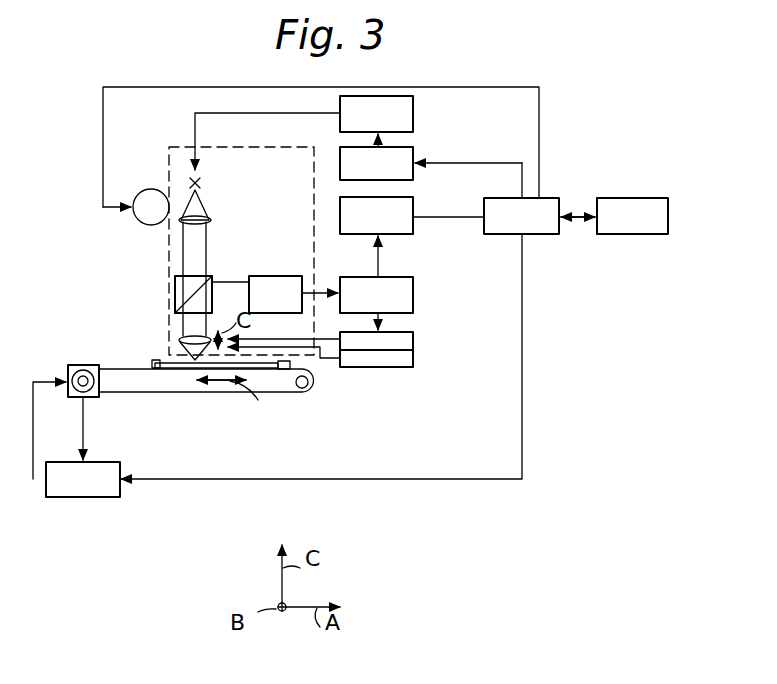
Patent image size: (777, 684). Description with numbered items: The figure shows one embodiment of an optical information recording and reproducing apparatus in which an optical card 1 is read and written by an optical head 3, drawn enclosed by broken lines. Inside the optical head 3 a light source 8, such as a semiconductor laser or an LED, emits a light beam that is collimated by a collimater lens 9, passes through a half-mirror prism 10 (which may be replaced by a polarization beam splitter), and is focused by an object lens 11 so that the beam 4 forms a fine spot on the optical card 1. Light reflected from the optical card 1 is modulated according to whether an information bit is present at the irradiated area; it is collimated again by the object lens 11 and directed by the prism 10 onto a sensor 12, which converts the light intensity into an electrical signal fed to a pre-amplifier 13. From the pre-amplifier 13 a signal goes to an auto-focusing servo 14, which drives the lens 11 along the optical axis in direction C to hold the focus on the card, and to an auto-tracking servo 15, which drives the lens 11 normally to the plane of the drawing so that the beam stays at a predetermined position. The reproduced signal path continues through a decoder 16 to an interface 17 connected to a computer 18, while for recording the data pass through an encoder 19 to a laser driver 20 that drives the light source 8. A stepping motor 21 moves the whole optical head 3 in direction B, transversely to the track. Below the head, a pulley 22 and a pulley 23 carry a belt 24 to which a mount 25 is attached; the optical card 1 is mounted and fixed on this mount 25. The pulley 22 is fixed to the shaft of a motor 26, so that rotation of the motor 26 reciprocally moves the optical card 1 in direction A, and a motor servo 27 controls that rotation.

The optical card 1 is at (172, 370).
The optical head 3 is at (258, 147).
The object lens 4 is at (190, 352).
The light source 8 is at (204, 183).
The collimater lens 9 is at (209, 222).
The half-mirror prism 10 is at (212, 279).
The object lens 11 is at (190, 336).
The sensor 12 is at (285, 282).
The pre-amplifier 13 is at (413, 290).
The auto-focusing servo 14 is at (413, 340).
The auto-tracking servo 15 is at (413, 360).
The decoder 16 is at (413, 205).
The interface 17 is at (548, 201).
The computer 18 is at (640, 205).
The encoder 19 is at (413, 153).
The laser driver 20 is at (413, 108).
The stepping motor 21 is at (141, 214).
The pulley 22 is at (88, 397).
The pulley 23 is at (302, 388).
The belt 24 is at (222, 393).
The mount 25 is at (290, 364).
The motor 26 is at (72, 397).
The motor servo 27 is at (88, 498).